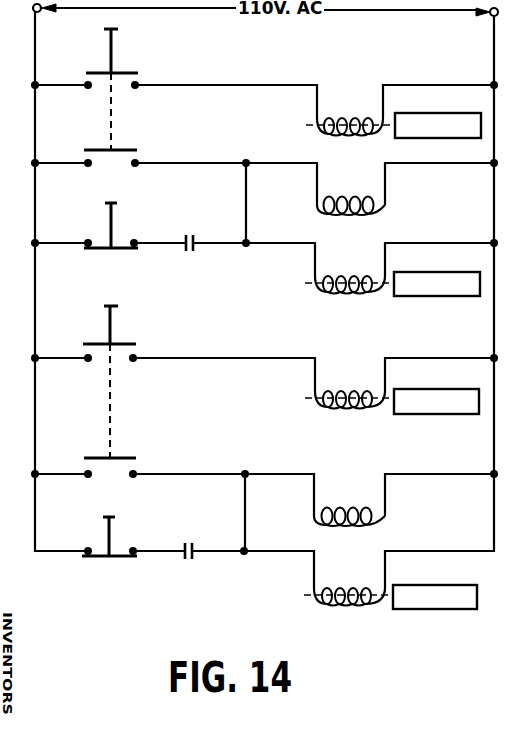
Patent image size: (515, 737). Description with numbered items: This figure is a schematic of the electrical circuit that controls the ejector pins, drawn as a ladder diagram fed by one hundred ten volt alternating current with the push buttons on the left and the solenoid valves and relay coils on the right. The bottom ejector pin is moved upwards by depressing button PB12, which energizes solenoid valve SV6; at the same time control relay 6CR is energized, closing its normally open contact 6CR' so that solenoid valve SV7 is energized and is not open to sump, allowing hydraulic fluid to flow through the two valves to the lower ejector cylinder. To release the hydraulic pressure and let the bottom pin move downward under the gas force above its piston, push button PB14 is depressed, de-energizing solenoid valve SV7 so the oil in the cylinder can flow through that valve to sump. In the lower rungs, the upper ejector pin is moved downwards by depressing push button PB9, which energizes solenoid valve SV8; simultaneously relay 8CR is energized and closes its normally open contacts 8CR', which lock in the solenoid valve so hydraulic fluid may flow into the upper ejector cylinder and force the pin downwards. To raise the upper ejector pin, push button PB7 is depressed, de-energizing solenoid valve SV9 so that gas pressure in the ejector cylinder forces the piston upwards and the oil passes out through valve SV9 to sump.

The push button PB12 is at (113, 47).
The solenoid valve SV6 is at (451, 118).
The control relay 6CR is at (375, 210).
The push button PB14 is at (113, 212).
The normally open contact 6CR' is at (217, 255).
The solenoid valve SV7 is at (440, 279).
The push button PB9 is at (113, 325).
The solenoid valve SV8 is at (449, 394).
The push button PB7 is at (112, 527).
The relay 8CR is at (368, 526).
The normally open contacts 8CR' is at (210, 566).
The solenoid valve SV9 is at (447, 589).